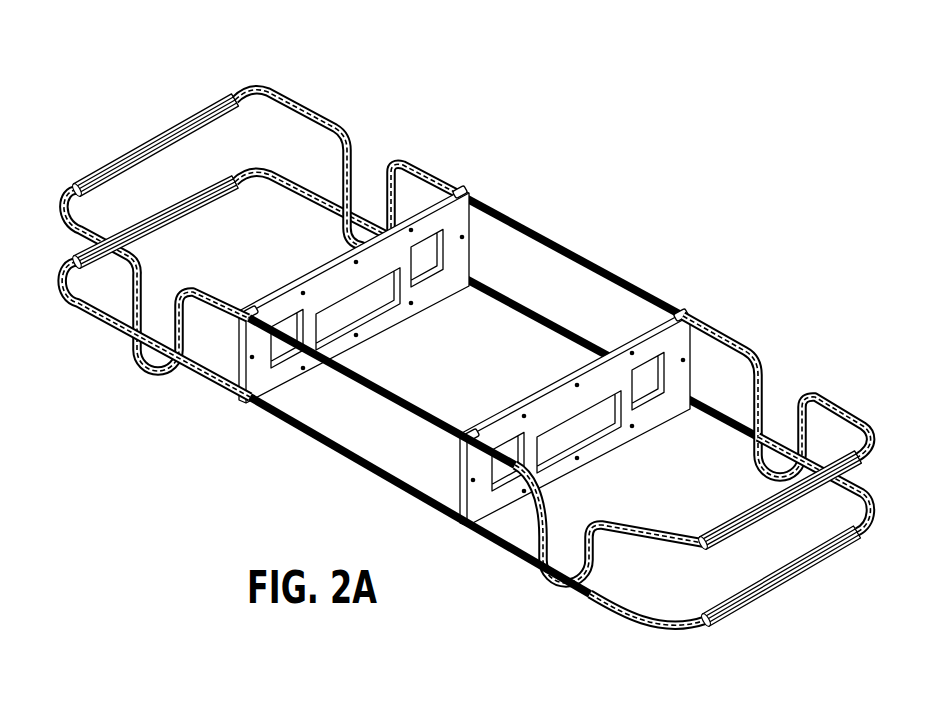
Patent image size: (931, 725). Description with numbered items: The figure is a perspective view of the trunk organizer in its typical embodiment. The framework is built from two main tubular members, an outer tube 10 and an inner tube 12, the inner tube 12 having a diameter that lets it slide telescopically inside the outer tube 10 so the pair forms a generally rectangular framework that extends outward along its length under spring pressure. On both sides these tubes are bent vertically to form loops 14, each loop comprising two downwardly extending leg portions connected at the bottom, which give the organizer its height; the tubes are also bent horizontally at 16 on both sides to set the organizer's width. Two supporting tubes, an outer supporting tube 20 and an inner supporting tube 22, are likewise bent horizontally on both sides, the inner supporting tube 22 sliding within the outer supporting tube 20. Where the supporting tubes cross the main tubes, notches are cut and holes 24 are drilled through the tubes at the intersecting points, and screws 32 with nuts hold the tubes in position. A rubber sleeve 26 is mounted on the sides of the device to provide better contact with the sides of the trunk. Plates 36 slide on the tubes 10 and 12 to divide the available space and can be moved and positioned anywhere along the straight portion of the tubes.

The outer tube 10 is at (430, 167).
The inner tube 12 is at (717, 340).
The loops 14 is at (155, 375).
The horizontal bends 16 is at (273, 91).
The outer supporting tube 20 is at (93, 318).
The inner supporting tube 22 is at (612, 609).
The holes 24 is at (343, 208).
The rubber sleeve 26 is at (173, 122).
The screws 32 is at (127, 337).
The plate 36 is at (540, 397).